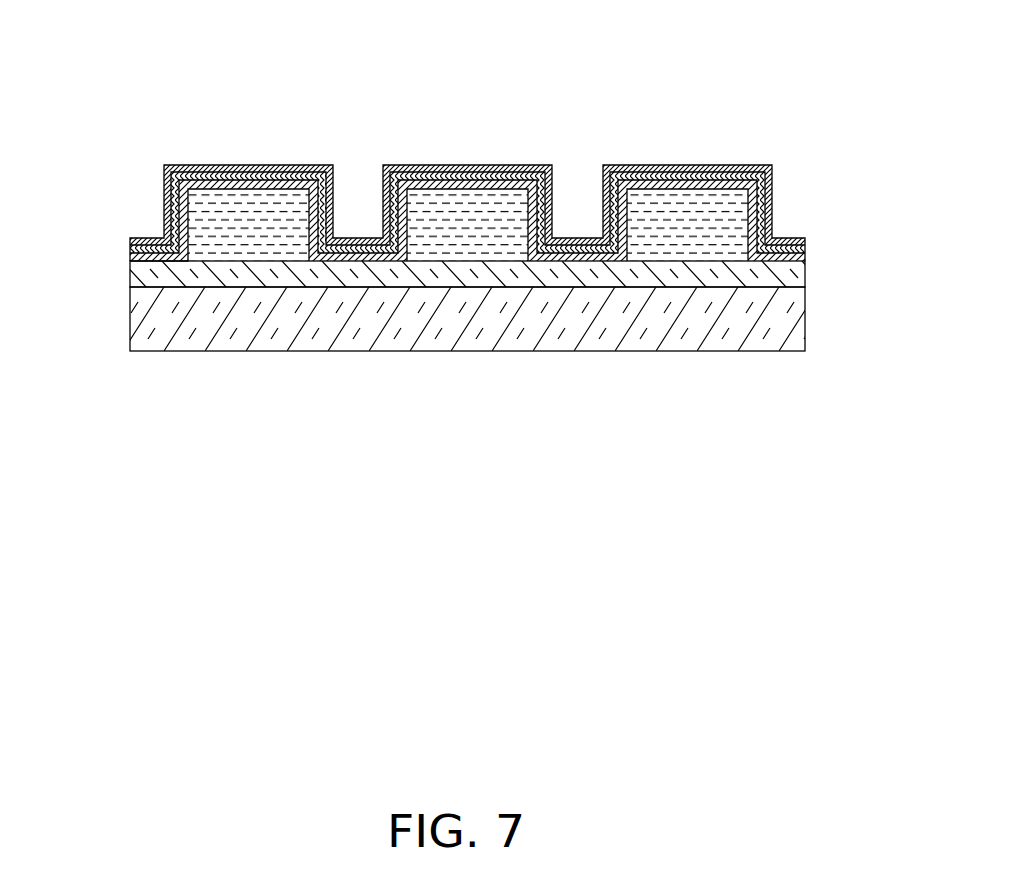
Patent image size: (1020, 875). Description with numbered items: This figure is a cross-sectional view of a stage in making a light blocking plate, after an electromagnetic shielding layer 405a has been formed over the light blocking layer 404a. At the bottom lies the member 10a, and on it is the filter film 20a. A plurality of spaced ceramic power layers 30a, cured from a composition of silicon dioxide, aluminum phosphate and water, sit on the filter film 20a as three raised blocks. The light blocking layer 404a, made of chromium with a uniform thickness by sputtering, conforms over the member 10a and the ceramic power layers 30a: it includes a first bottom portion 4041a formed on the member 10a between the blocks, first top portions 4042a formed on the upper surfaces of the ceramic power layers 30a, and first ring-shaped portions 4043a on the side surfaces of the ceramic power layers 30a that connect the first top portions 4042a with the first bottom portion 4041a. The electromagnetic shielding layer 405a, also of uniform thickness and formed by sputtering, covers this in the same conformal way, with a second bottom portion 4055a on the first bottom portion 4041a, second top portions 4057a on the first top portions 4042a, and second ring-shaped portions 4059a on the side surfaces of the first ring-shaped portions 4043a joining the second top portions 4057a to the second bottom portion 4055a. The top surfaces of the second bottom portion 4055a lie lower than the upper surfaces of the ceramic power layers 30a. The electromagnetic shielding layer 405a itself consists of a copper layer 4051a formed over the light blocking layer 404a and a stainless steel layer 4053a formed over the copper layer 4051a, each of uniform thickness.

The member 10a is at (722, 312).
The filter film 20a is at (777, 277).
The ceramic power layers 30a is at (445, 208).
The light blocking layer 404a is at (454, 339).
The first bottom portion 4041a is at (187, 217).
The first top portions 4042a is at (250, 222).
The first ring-shaped portions 4043a is at (238, 182).
The electromagnetic shielding layer 405a is at (440, 140).
The copper layer 4051a is at (698, 175).
The stainless steel layer 4053a is at (660, 168).
The second bottom portion 4055a is at (142, 238).
The second top portions 4057a is at (467, 164).
The second ring-shaped portions 4059a is at (169, 183).